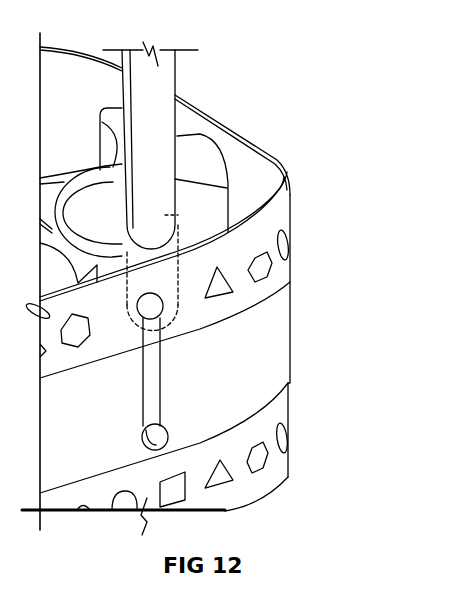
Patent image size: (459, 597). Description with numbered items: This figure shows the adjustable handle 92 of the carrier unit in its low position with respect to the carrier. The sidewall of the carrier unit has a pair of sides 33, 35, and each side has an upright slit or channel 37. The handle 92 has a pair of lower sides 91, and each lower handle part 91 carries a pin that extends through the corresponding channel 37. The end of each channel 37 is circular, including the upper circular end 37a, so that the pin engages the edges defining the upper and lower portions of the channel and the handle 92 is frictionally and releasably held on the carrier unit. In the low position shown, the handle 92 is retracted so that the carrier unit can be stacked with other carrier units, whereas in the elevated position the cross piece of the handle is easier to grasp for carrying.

The side 33 is at (57, 441).
The side 35 is at (57, 118).
The upright slit or channel 37 is at (177, 357).
The pin head 37a is at (146, 306).
The lower side 91 is at (165, 215).
The adjustable handle 92 is at (186, 90).